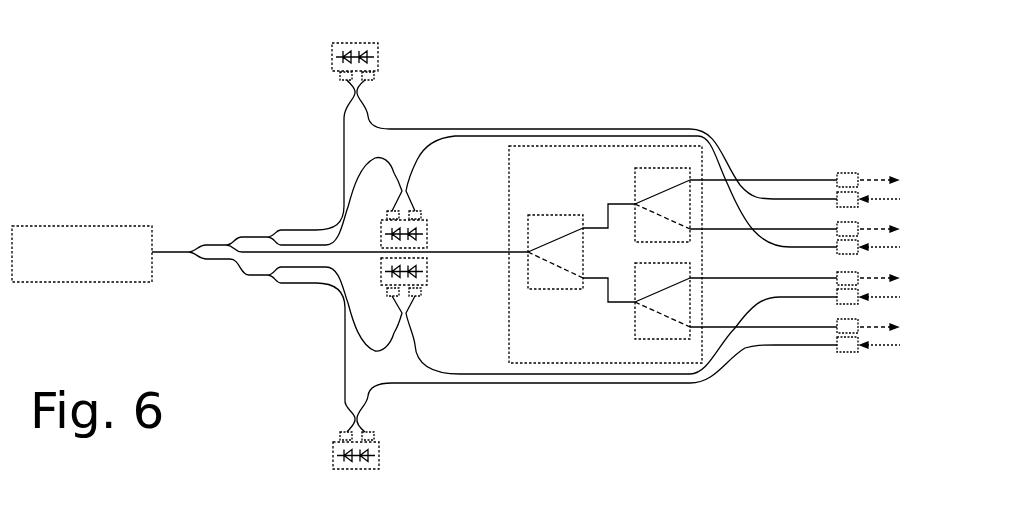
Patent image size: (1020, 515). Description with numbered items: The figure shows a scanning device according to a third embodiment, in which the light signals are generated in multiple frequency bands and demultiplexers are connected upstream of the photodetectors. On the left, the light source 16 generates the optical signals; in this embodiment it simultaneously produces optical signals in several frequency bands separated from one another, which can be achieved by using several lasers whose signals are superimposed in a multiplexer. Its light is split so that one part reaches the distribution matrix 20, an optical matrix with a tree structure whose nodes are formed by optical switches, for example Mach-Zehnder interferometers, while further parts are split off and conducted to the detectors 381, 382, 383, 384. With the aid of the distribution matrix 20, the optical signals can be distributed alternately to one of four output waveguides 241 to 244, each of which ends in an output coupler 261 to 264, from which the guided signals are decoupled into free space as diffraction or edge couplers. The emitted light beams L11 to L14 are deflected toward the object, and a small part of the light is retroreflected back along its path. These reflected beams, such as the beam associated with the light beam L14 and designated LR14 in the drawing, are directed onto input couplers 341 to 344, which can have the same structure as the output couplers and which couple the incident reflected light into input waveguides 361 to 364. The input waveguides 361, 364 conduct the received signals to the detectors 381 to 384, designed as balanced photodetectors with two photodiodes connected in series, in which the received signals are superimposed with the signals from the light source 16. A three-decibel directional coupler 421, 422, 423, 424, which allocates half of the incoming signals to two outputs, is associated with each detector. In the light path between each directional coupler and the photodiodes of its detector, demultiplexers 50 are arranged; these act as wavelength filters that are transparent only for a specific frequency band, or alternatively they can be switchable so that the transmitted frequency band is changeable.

The light source 16 is at (83, 226).
The distribution matrix 20 is at (553, 146).
The demultiplexer 50 is at (335, 73).
The detector 381 is at (333, 446).
The detector 382 is at (428, 282).
The detector 383 is at (428, 232).
The detector 384 is at (340, 43).
The 3 dB directional coupler 421 is at (368, 420).
The 3 dB directional coupler 422 is at (418, 315).
The 3 dB directional coupler 423 is at (418, 195).
The 3 dB directional coupler 424 is at (380, 92).
The output waveguide 241 is at (766, 329).
The output waveguide 244 is at (780, 179).
The output coupler 261 is at (836, 328).
The output coupler 264 is at (847, 195).
The input coupler 341 is at (847, 352).
The input coupler 344 is at (830, 197).
The input waveguide 361 is at (736, 366).
The input waveguide 364 is at (730, 168).
The light beam L11 is at (870, 329).
The light beam L14 is at (885, 177).
The reflected light LR14 is at (872, 198).